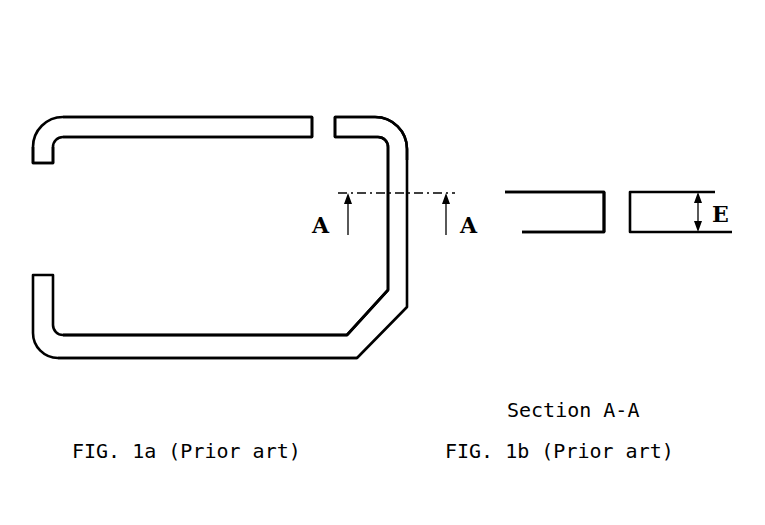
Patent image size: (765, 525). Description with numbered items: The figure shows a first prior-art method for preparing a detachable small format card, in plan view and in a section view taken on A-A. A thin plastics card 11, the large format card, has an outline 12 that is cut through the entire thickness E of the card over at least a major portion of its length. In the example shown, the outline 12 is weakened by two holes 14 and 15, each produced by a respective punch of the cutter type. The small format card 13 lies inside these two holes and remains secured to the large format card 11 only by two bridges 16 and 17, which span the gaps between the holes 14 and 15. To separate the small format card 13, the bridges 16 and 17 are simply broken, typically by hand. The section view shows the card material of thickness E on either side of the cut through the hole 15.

In FIG. 1A, the thin plastics card 11 is at (138, 48).
In FIG. 1B, the thin plastics card 11 is at (655, 202).
In FIG. 1A, the outline 12 is at (123, 335).
In FIG. 1A, the small format card 13 is at (192, 243).
In FIG. 1B, the small format card 13 is at (567, 202).
In FIG. 1A, the hole 14 is at (195, 127).
In FIG. 1A, the hole 15 is at (356, 125).
In FIG. 1B, the hole 15 is at (617, 212).
In FIG. 1A, the bridge 16 is at (322, 122).
In FIG. 1A, the bridge 17 is at (45, 195).